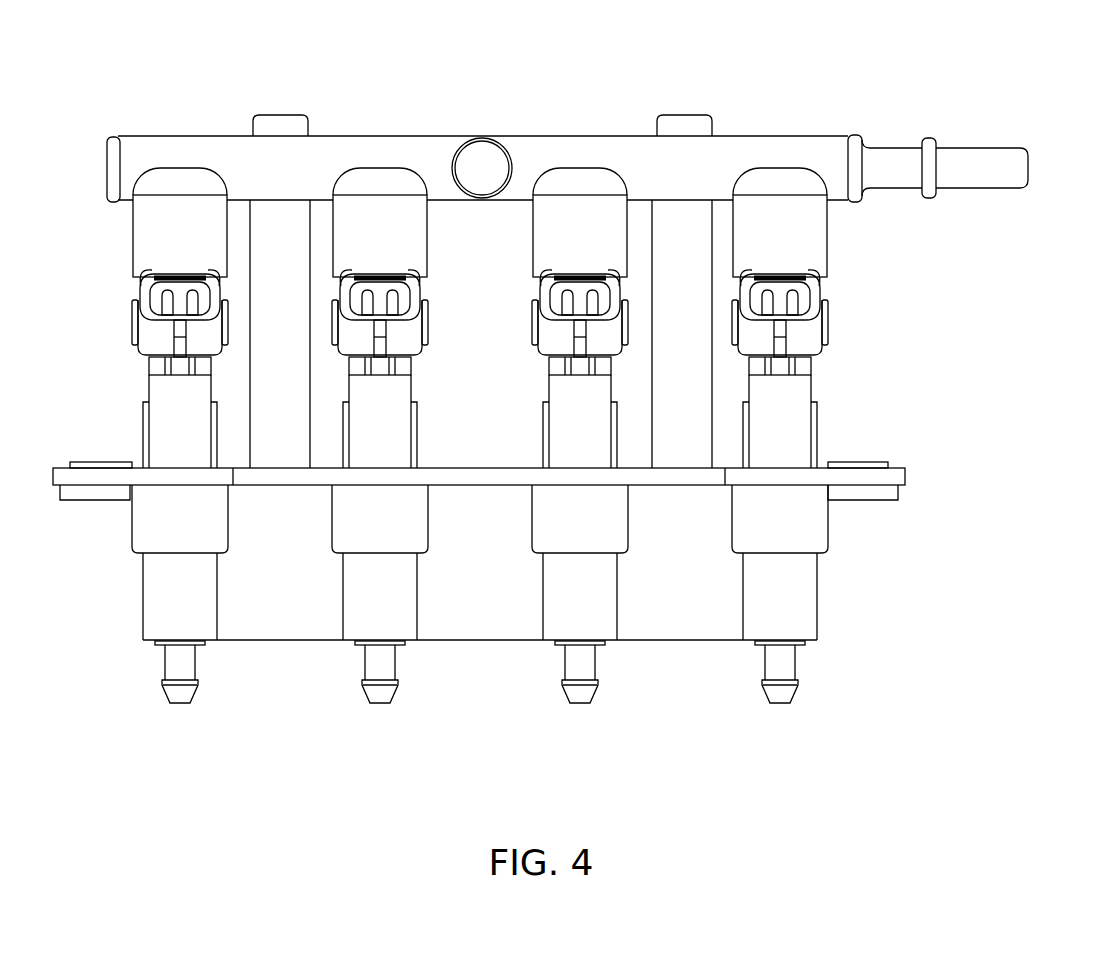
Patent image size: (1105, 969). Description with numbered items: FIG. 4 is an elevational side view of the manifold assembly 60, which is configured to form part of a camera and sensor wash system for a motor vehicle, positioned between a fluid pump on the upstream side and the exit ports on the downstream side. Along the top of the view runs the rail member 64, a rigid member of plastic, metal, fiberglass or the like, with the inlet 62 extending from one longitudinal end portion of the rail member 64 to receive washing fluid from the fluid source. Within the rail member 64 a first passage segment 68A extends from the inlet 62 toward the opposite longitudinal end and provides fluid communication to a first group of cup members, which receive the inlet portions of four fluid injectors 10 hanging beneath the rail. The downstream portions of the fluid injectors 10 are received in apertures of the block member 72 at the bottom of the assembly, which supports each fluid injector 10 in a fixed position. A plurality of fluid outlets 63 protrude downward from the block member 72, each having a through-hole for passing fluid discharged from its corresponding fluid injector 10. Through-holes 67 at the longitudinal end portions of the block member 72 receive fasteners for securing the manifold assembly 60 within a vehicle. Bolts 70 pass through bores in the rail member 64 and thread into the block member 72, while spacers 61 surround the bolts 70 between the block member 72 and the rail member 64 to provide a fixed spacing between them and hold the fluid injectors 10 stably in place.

The manifold assembly 60 is at (1034, 81).
The inlet 62 is at (975, 148).
The rail member 64 is at (168, 135).
The first passage segment 68A is at (402, 148).
The bolt 70 is at (280, 115).
The fluid injector 10 is at (131, 322).
The spacer 61 is at (273, 440).
The through-hole 67 is at (102, 462).
The block member 72 is at (480, 632).
The fluid outlet 63 is at (178, 697).